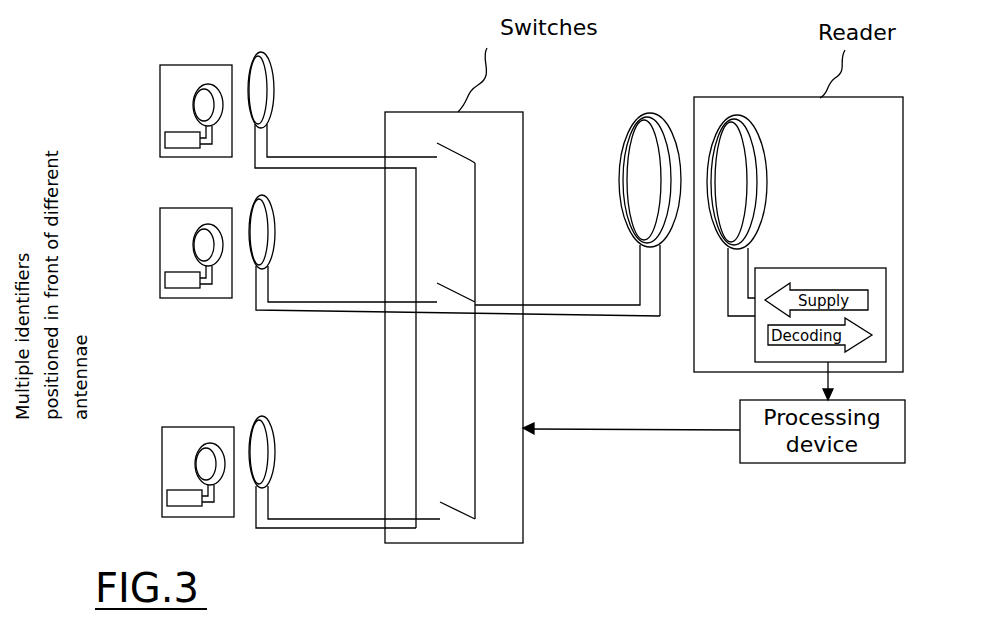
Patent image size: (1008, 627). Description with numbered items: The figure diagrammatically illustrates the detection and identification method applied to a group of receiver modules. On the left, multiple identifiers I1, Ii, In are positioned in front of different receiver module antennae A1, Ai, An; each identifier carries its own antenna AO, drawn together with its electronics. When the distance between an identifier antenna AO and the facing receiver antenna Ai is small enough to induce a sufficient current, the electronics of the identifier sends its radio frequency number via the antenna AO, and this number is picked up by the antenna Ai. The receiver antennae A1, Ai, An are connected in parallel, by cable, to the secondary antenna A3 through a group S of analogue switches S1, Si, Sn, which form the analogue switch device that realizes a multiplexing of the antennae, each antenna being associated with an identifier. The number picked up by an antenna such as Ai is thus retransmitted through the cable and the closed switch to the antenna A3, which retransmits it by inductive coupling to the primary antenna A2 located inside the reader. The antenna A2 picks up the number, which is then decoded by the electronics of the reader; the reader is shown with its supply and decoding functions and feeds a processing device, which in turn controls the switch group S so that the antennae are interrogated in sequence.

The antenna AO is at (195, 276).
The identifier I1 is at (76, 174).
The identifier Ii is at (75, 242).
The identifier In is at (95, 390).
The receiver module antenna A1 is at (342, 288).
The receiver module antenna Ai is at (454, 255).
The receiver module antenna An is at (344, 472).
The antenna A2 is at (749, 215).
The antenna A3 is at (578, 214).
The group of analogue switches S is at (453, 312).
The analogue switch S1 is at (472, 148).
The analogue switch Si is at (469, 290).
The analogue switch Sn is at (474, 511).